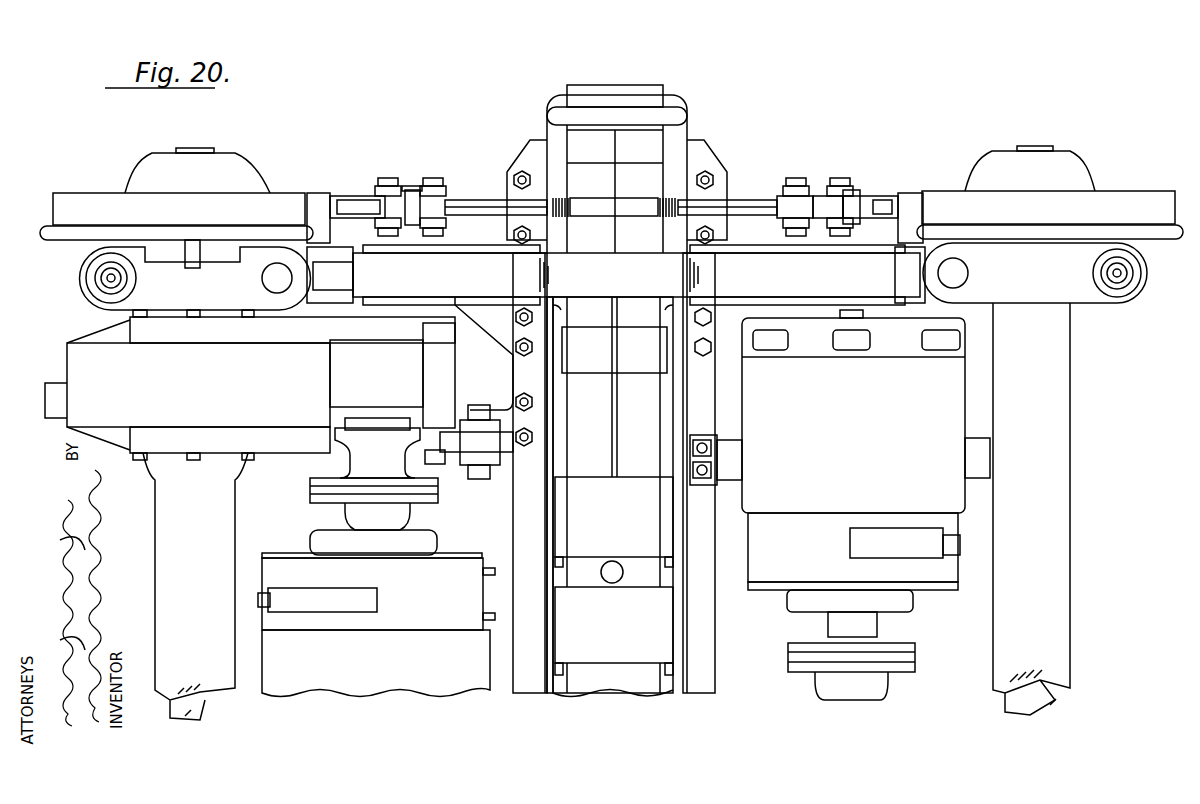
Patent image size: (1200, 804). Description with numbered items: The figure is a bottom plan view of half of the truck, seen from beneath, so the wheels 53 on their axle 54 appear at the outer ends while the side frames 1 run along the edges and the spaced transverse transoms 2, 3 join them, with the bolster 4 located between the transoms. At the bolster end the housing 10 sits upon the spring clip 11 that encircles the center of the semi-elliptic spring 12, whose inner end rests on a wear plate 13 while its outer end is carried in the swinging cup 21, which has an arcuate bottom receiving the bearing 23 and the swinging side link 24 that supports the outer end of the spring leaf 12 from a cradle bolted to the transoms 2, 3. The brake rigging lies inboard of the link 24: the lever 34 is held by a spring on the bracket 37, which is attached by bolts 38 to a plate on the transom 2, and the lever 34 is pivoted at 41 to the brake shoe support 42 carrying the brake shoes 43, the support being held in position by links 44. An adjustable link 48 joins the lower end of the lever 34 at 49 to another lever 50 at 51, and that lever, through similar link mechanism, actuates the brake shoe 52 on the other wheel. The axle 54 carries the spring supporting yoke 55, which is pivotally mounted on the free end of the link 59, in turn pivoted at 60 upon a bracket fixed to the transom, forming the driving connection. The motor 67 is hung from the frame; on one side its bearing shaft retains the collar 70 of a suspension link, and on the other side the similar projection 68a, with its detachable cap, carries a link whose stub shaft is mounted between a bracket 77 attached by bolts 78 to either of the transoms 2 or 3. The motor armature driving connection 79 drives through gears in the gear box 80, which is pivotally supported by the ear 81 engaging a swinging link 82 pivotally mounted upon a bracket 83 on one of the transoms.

The side frames 1 is at (605, 270).
The transom 2 is at (703, 693).
The transom 3 is at (523, 693).
The bolster 4 is at (555, 693).
The housing 10 is at (562, 321).
The spring clip 11 is at (612, 348).
The semi-elliptic spring 12 is at (625, 418).
The wear plate 13 is at (614, 576).
The swinging cup 21 is at (615, 85).
The bearing 23 is at (668, 98).
The swinging side link 24 is at (548, 115).
The lever 34 is at (412, 202).
The bracket 37 is at (730, 180).
The bolts 38 is at (707, 173).
The pivot 41 is at (432, 180).
The brake shoe support 42 is at (352, 198).
The brake shoes 43 is at (318, 198).
The links 44 is at (382, 188).
The adjustable link 48 is at (480, 200).
The connection point 49 is at (414, 186).
The lever 50 is at (830, 193).
The connection point 51 is at (800, 196).
The brake shoe 52 is at (912, 200).
The wheels 53 is at (86, 206).
The axle 54 is at (187, 152).
The spring supporting yoke 55 is at (95, 306).
The link 59 is at (452, 268).
The pivot 60 is at (510, 302).
The motor 67 is at (347, 690).
The projection 68a is at (722, 440).
The collar 70 is at (978, 475).
The bracket 77 is at (693, 485).
The bolts 78 is at (704, 440).
The motor armature driving connection 79 is at (310, 490).
The gear box 80 is at (226, 390).
The ear 81 is at (437, 420).
The swinging link 82 is at (472, 465).
The bracket 83 is at (510, 455).